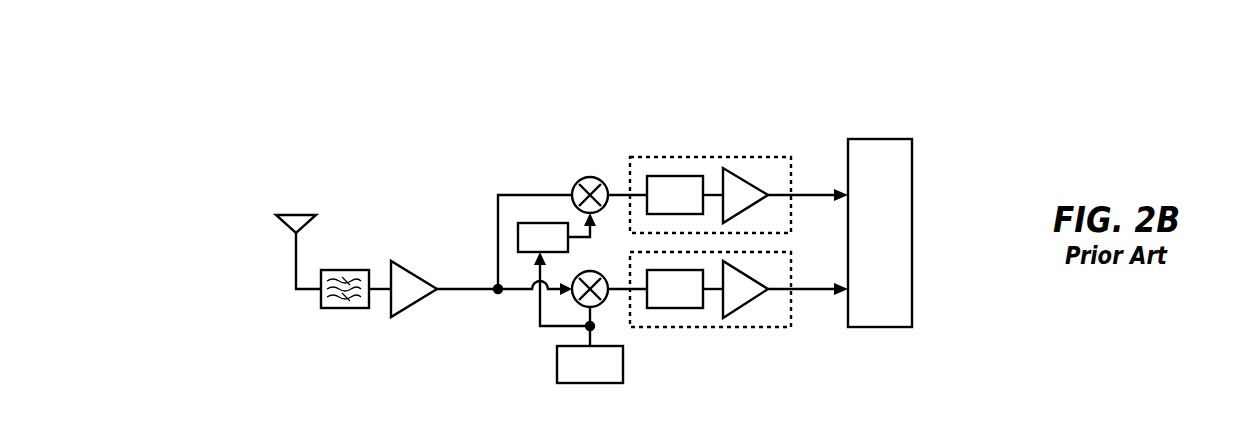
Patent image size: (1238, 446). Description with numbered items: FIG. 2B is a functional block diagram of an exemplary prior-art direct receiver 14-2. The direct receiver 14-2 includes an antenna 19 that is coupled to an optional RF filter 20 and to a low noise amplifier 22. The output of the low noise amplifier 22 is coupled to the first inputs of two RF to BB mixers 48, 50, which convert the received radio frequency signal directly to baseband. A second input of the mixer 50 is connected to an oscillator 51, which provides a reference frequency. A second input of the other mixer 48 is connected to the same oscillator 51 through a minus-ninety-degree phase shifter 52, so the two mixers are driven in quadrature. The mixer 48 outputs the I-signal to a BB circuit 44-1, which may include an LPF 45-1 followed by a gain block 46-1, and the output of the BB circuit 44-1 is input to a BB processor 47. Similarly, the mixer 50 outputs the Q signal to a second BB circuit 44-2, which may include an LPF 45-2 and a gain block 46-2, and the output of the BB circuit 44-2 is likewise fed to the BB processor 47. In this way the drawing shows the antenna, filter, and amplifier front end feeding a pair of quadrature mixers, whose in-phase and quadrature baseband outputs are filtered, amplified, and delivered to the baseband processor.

The direct receiver 14-2 is at (401, 111).
The antenna 19 is at (312, 216).
The RF filter 20 is at (350, 310).
The low noise amplifier 22 is at (417, 303).
The RF to BB mixer 48 is at (585, 173).
The −90° phase shifter 52 is at (570, 243).
The RF to BB mixer 50 is at (603, 303).
The oscillator 51 is at (592, 385).
The BB circuit 44-1 is at (724, 180).
The LPF 45-1 is at (667, 175).
The gain block 46-1 is at (737, 170).
The BB circuit 44-2 is at (741, 312).
The LPF 45-2 is at (670, 310).
The gain block 46-2 is at (738, 308).
The BB processor 47 is at (878, 137).